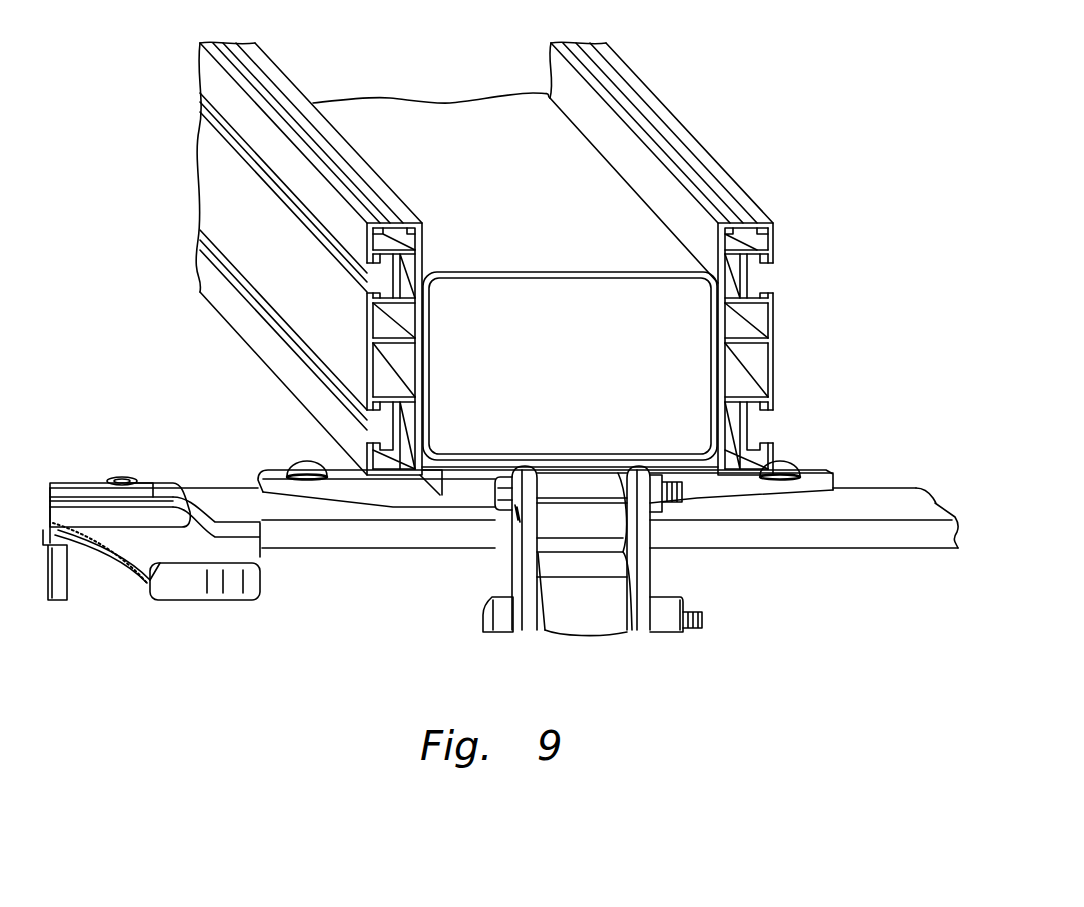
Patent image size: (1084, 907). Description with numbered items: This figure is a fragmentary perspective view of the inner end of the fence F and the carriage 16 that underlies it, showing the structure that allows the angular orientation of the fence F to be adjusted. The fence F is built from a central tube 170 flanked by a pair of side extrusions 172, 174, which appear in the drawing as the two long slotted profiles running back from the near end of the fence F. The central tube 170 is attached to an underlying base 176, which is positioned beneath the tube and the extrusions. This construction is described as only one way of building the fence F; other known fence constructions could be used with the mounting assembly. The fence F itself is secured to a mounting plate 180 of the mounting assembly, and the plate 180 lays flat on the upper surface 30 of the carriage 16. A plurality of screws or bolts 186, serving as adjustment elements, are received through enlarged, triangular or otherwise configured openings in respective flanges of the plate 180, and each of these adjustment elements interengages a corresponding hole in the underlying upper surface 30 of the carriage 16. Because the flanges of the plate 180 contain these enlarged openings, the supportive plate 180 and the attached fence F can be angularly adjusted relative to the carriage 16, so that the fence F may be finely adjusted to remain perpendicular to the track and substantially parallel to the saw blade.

The fence F is at (710, 155).
The carriage 16 is at (392, 550).
The upper surface of carriage 30 is at (230, 498).
The central tube 170 is at (548, 270).
The side extrusion 172 is at (368, 333).
The side extrusion 174 is at (777, 322).
The base 176 is at (687, 473).
The mounting plate 180 is at (270, 470).
The screws or bolts 186 is at (298, 465).